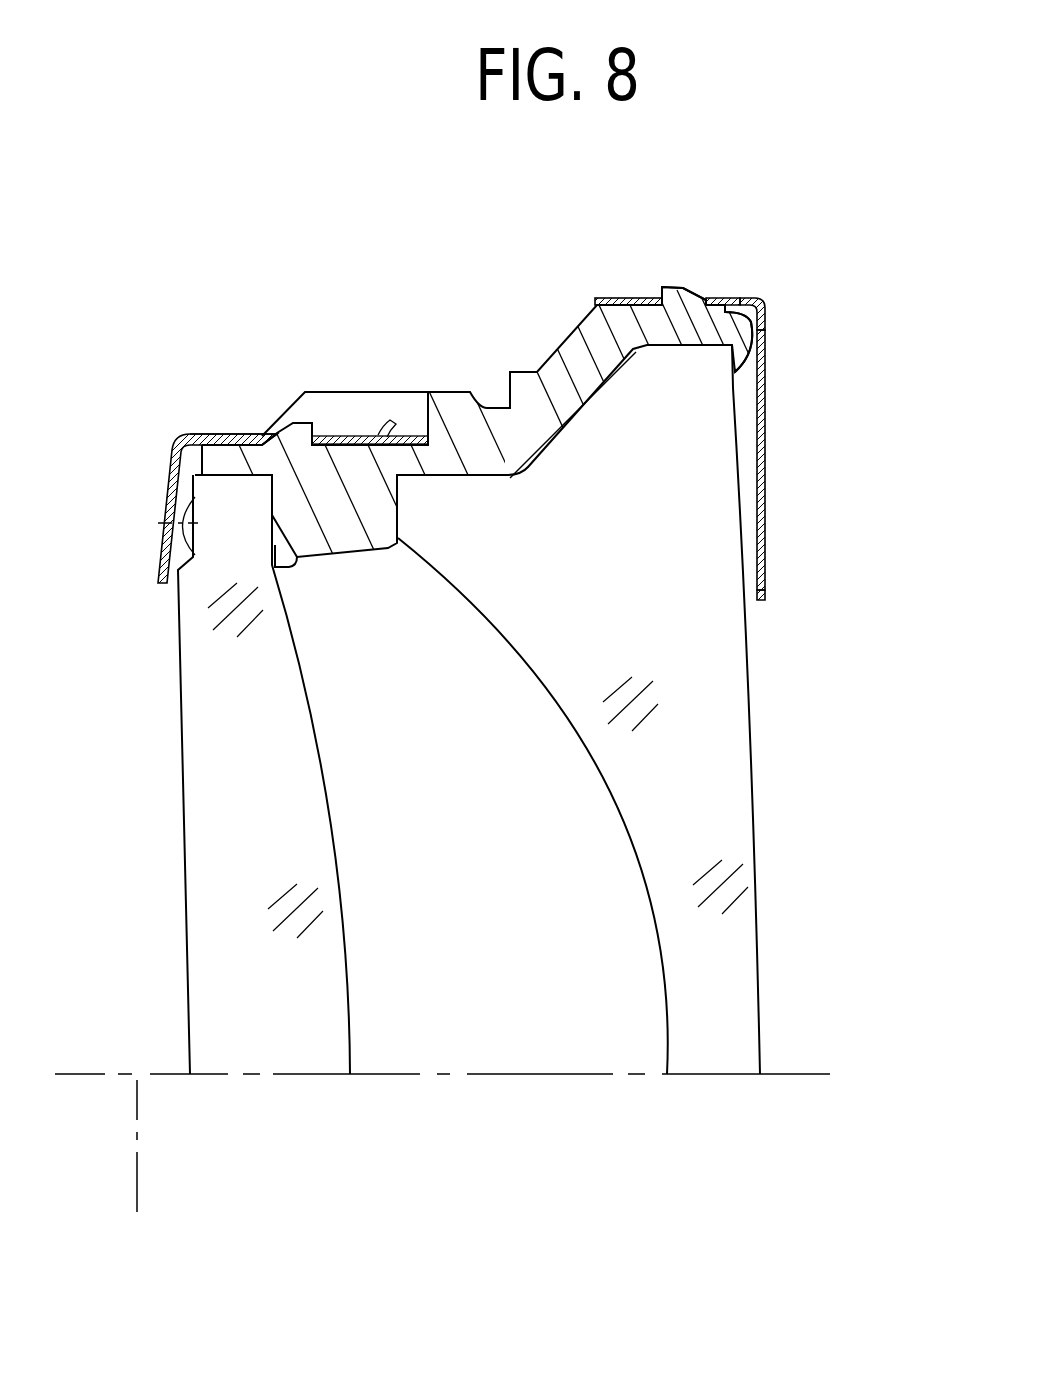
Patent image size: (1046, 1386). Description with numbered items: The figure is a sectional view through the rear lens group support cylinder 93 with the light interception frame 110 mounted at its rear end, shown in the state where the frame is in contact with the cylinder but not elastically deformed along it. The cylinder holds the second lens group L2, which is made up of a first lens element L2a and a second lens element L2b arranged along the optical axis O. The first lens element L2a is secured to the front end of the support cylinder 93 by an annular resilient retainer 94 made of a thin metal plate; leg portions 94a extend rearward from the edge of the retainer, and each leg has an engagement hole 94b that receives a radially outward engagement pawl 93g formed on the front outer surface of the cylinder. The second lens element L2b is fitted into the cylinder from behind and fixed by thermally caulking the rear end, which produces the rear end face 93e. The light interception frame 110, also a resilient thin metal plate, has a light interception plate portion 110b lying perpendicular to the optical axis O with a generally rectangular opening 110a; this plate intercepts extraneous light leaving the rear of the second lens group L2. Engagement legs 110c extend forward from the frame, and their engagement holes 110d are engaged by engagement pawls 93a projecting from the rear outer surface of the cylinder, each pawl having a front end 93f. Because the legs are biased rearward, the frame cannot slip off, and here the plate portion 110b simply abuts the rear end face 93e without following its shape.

The rear lens group support cylinder 93 is at (464, 380).
The engagement pawl 93a is at (673, 293).
The rear end face 93e is at (765, 332).
The front end of engagement pawl 93f is at (658, 297).
The engagement pawl 93g is at (272, 435).
The annular resilient retainer 94 is at (148, 468).
The leg portion 94a is at (212, 435).
The engagement hole 94b is at (258, 440).
The light interception frame 110 is at (730, 408).
The rectangular opening 110a is at (765, 600).
The light interception plate portion 110b is at (765, 403).
The engagement leg 110c is at (627, 297).
The engagement hole 110d is at (717, 293).
The first lens element L2a is at (295, 1063).
The second lens element L2b is at (700, 1060).
The second lens group L2 is at (615, 1175).
The optical axis O is at (442, 1169).